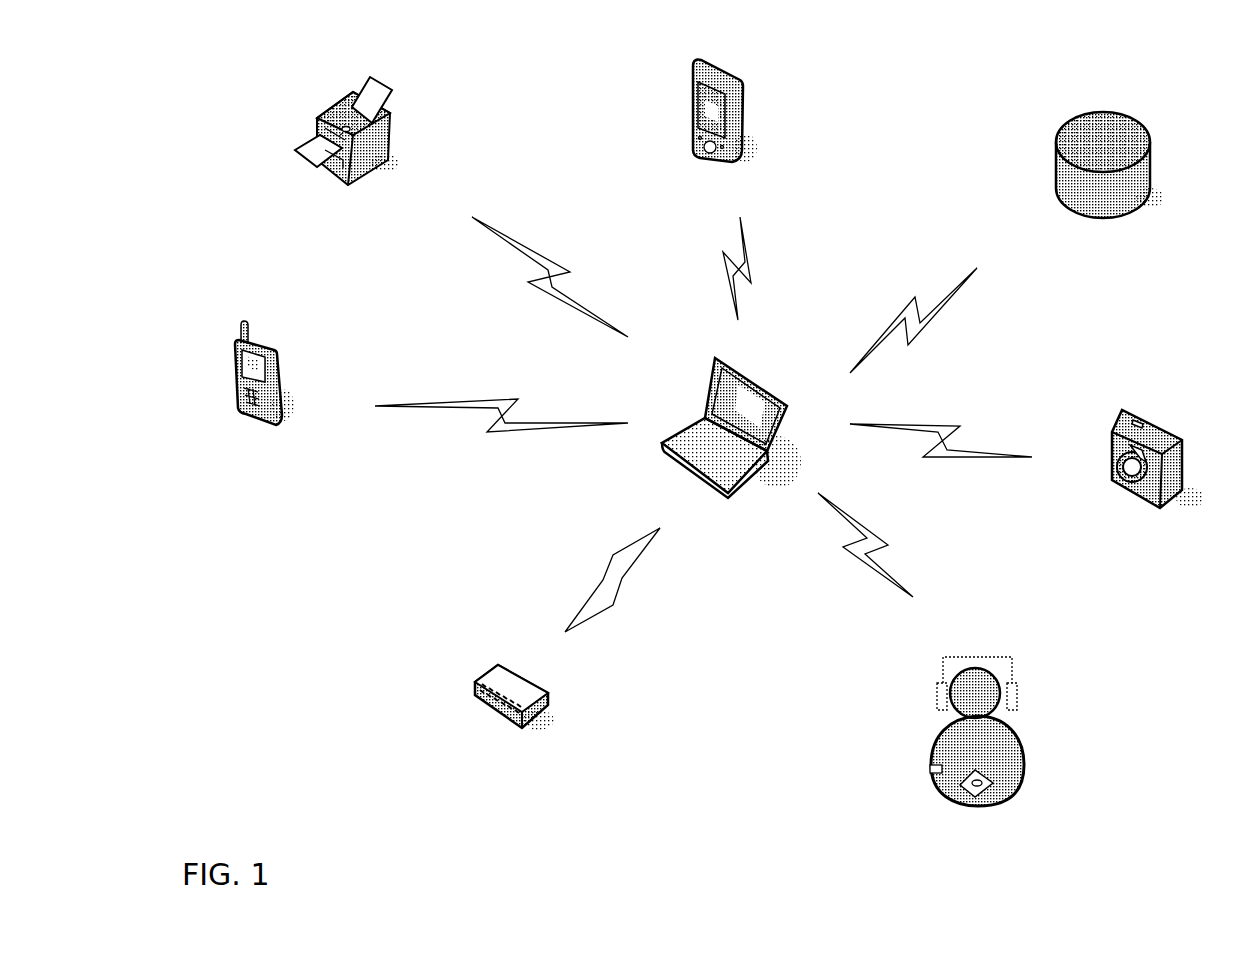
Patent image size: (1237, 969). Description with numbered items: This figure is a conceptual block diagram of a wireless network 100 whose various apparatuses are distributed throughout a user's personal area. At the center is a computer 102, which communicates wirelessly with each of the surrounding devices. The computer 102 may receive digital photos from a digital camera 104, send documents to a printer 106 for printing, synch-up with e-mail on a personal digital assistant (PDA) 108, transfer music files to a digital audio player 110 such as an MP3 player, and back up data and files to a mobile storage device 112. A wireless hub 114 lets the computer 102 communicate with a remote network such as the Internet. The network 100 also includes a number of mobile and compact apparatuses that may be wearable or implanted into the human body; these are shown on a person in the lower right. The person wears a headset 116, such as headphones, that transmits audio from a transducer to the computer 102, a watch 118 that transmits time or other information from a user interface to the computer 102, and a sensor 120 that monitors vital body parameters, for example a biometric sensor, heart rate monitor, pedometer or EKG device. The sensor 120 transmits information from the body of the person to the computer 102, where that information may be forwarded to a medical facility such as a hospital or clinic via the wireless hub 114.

The network 100 is at (550, 60).
The computer 102 is at (699, 402).
The digital camera 104 is at (1184, 468).
The printer 106 is at (390, 150).
The personal digital assistant (PDA) 108 is at (283, 383).
The digital audio player 110 is at (743, 108).
The mobile storage device 112 is at (1152, 180).
The wireless hub 114 is at (550, 693).
The headset 116 is at (1012, 657).
The watch 118 is at (926, 770).
The sensor 120 is at (1022, 786).